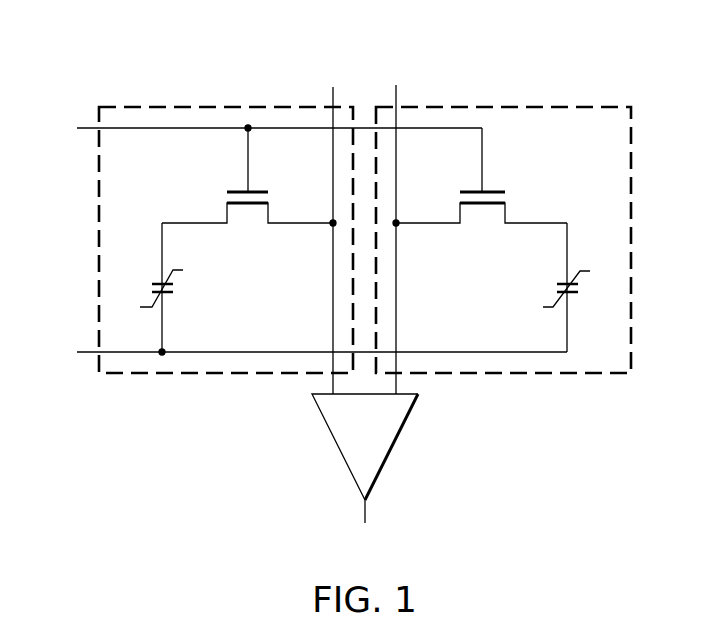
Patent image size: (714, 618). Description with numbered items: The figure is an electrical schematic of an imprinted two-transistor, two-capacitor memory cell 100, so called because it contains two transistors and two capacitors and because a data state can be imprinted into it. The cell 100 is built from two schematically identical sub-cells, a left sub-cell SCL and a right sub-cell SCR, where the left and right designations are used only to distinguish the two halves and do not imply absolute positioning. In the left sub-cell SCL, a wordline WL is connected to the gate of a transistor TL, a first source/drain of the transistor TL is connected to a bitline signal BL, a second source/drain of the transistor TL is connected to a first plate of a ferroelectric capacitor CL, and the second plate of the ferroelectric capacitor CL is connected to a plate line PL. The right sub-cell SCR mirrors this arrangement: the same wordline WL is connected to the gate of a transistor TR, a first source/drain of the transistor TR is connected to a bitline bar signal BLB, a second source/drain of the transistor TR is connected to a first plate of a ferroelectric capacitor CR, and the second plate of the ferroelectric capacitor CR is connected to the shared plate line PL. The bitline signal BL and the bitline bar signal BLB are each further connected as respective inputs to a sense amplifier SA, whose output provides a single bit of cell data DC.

The imprinted 2T-2C memory cell 100 is at (184, 64).
The left sub-cell SCL is at (226, 240).
The right sub-cell SCR is at (503, 240).
The wordline WL is at (261, 155).
The plate line PL is at (305, 353).
The bitline signal BL is at (334, 228).
The bitline bar signal BLB is at (398, 227).
The transistor TL is at (247, 227).
The transistor TR is at (481, 227).
The ferroelectric capacitor CL is at (170, 287).
The ferroelectric capacitor CR is at (575, 287).
The sense amplifier SA is at (365, 447).
The cell data DC is at (364, 531).